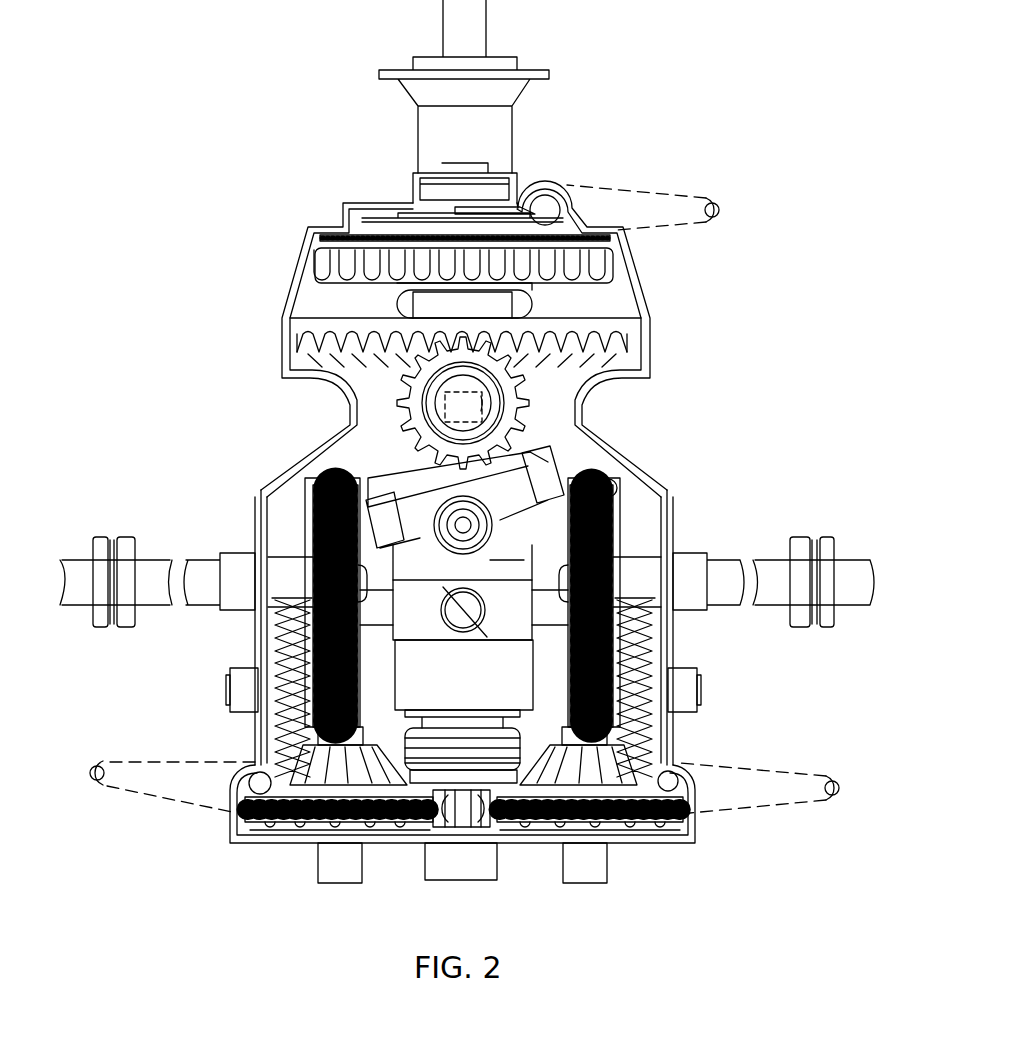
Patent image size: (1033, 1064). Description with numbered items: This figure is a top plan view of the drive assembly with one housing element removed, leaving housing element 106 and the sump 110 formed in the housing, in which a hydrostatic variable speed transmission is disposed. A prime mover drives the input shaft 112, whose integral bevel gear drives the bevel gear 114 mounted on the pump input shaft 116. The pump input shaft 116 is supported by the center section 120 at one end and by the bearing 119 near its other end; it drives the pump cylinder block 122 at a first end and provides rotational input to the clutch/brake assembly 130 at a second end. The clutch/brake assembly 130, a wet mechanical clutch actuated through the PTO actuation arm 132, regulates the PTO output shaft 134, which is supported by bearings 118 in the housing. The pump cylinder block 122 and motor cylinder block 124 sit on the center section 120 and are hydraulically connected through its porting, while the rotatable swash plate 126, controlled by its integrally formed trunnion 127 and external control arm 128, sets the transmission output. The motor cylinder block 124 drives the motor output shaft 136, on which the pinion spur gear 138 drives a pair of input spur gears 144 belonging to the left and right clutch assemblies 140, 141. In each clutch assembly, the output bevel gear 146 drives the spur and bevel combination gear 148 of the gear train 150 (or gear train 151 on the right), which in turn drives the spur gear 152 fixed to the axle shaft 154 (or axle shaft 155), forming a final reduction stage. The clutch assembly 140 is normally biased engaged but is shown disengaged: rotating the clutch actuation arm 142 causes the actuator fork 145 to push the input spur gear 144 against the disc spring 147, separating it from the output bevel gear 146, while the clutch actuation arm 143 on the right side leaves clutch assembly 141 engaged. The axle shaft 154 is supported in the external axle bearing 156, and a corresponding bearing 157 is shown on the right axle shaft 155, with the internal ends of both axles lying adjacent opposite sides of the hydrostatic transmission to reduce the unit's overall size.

The housing element 106 is at (652, 483).
The sump 110 is at (290, 530).
The input shaft 112 is at (518, 396).
The bevel gear 114 is at (625, 340).
The pump input shaft 116 is at (437, 400).
The bearings 118 is at (493, 192).
The bearing 119 is at (490, 305).
The center section 120 is at (464, 610).
The pump cylinder block 122 is at (462, 538).
The motor cylinder block 124 is at (464, 711).
The swash plate 126 is at (395, 475).
The trunnion 127 is at (463, 530).
The external control arm 128 is at (533, 480).
The clutch/brake assembly 130 is at (310, 299).
The PTO actuation arm 132 is at (628, 190).
The PTO output shaft 134 is at (470, 9).
The motor output shaft 136 is at (460, 788).
The pinion spur gear 138 is at (473, 815).
The left side clutch assembly 140 is at (239, 868).
The right side clutch assembly 141 is at (687, 867).
The clutch actuation arm 142 is at (182, 762).
The clutch actuation arm 143 is at (747, 768).
The input spur gear 144 is at (300, 803).
The actuator fork 145 is at (322, 797).
The output bevel gear 146 is at (327, 770).
The disc spring 147 is at (383, 830).
The spur and bevel combination gear 148 is at (280, 632).
The gear train 150 is at (188, 696).
The gear train 151 is at (741, 696).
The spur gear 152 is at (333, 525).
The axle shaft 154 is at (152, 560).
The axle shaft 155 is at (777, 560).
The axle bearing 156 is at (128, 533).
The right axle bearing 157 is at (803, 537).